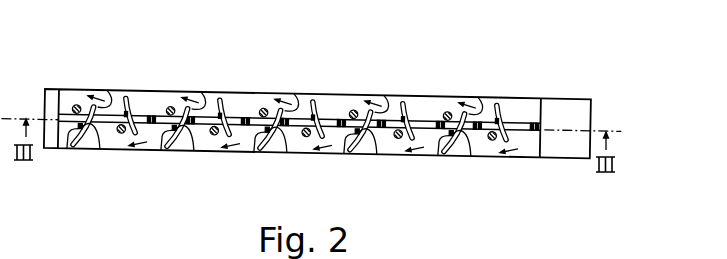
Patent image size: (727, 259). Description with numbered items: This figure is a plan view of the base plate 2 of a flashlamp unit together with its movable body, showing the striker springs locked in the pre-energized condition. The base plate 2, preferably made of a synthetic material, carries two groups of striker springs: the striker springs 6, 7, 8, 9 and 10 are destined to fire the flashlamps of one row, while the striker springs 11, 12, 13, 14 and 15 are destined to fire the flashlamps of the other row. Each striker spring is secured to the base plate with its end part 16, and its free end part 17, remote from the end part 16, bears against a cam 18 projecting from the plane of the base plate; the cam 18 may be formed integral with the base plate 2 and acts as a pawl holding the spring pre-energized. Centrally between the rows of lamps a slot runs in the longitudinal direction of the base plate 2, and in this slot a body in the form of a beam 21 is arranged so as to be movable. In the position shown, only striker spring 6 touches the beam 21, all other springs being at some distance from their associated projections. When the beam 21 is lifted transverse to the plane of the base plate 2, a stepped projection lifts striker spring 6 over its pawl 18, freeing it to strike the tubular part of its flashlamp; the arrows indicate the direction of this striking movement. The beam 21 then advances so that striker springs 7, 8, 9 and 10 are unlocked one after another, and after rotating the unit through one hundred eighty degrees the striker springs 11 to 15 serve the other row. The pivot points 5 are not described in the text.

The base plate 2 is at (562, 103).
The pivot pin 5 is at (77, 104).
The striker spring 6 is at (101, 148).
The striker spring 7 is at (195, 148).
The striker spring 8 is at (288, 148).
The striker spring 9 is at (378, 148).
The striker spring 10 is at (472, 148).
The striker spring 11 is at (160, 96).
The striker spring 12 is at (241, 96).
The striker spring 13 is at (323, 103).
The striker spring 14 is at (423, 110).
The striker spring 15 is at (510, 108).
The end part 16 is at (138, 97).
The free end part 17 is at (107, 89).
The cam 18 is at (126, 97).
The beam 21 is at (422, 118).